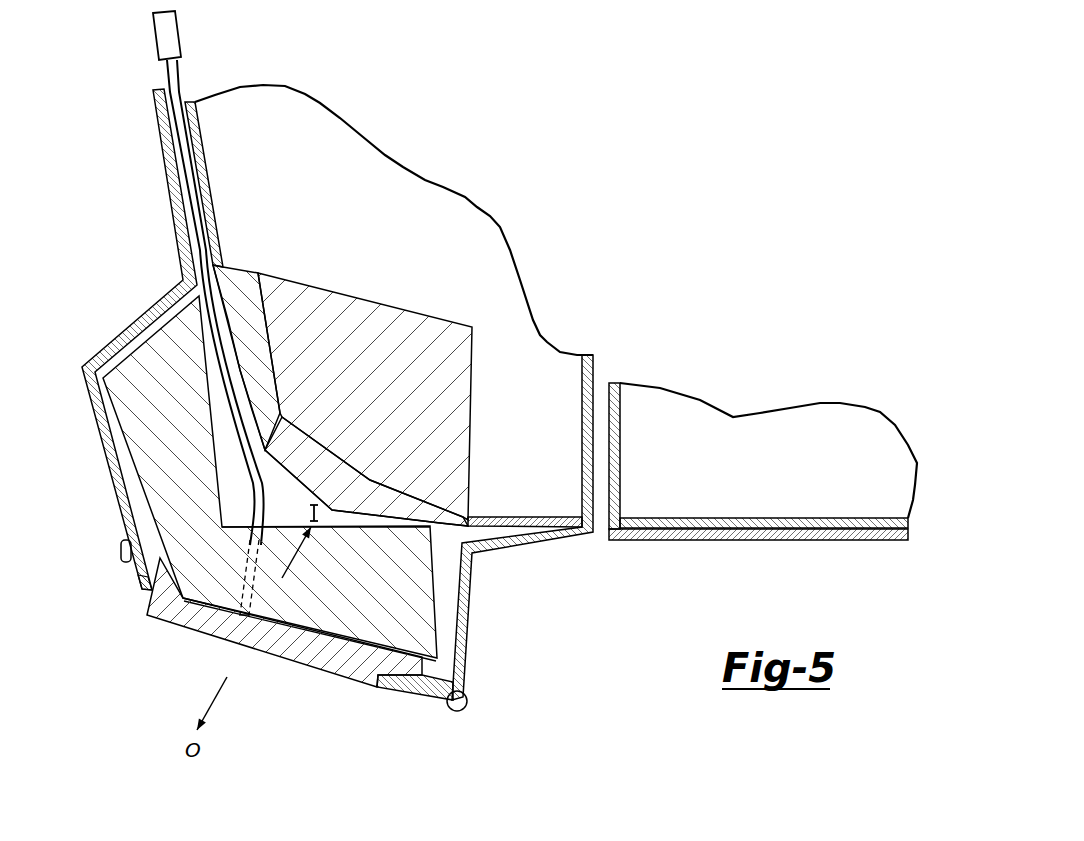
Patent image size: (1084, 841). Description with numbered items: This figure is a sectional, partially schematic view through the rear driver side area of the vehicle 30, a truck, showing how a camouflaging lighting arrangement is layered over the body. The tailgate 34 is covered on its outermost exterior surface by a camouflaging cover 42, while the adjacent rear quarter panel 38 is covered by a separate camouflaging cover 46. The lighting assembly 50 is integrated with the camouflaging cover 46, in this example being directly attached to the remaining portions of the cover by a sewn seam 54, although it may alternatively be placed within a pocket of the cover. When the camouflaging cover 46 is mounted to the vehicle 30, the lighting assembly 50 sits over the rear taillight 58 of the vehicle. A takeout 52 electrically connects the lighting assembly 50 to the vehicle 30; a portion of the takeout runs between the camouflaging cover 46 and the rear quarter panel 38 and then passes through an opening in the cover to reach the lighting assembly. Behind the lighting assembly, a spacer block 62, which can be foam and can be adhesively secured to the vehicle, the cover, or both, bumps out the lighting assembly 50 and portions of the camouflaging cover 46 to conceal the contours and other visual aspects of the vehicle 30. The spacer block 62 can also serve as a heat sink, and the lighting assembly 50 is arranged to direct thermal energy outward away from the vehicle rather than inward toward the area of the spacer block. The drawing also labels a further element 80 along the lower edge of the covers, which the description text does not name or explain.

The vehicle 30 is at (533, 503).
The tailgate 34 is at (863, 530).
The rear quarter panel 38 is at (200, 192).
The camouflaging cover 42 is at (745, 540).
The camouflaging cover 46 is at (138, 322).
The lighting assembly 50 is at (295, 677).
The takeout 52 is at (208, 338).
The sewn seam 54 is at (115, 558).
The rear taillight 58 is at (282, 493).
The spacer block 62 is at (137, 470).
The retaining clip 80 is at (138, 579).